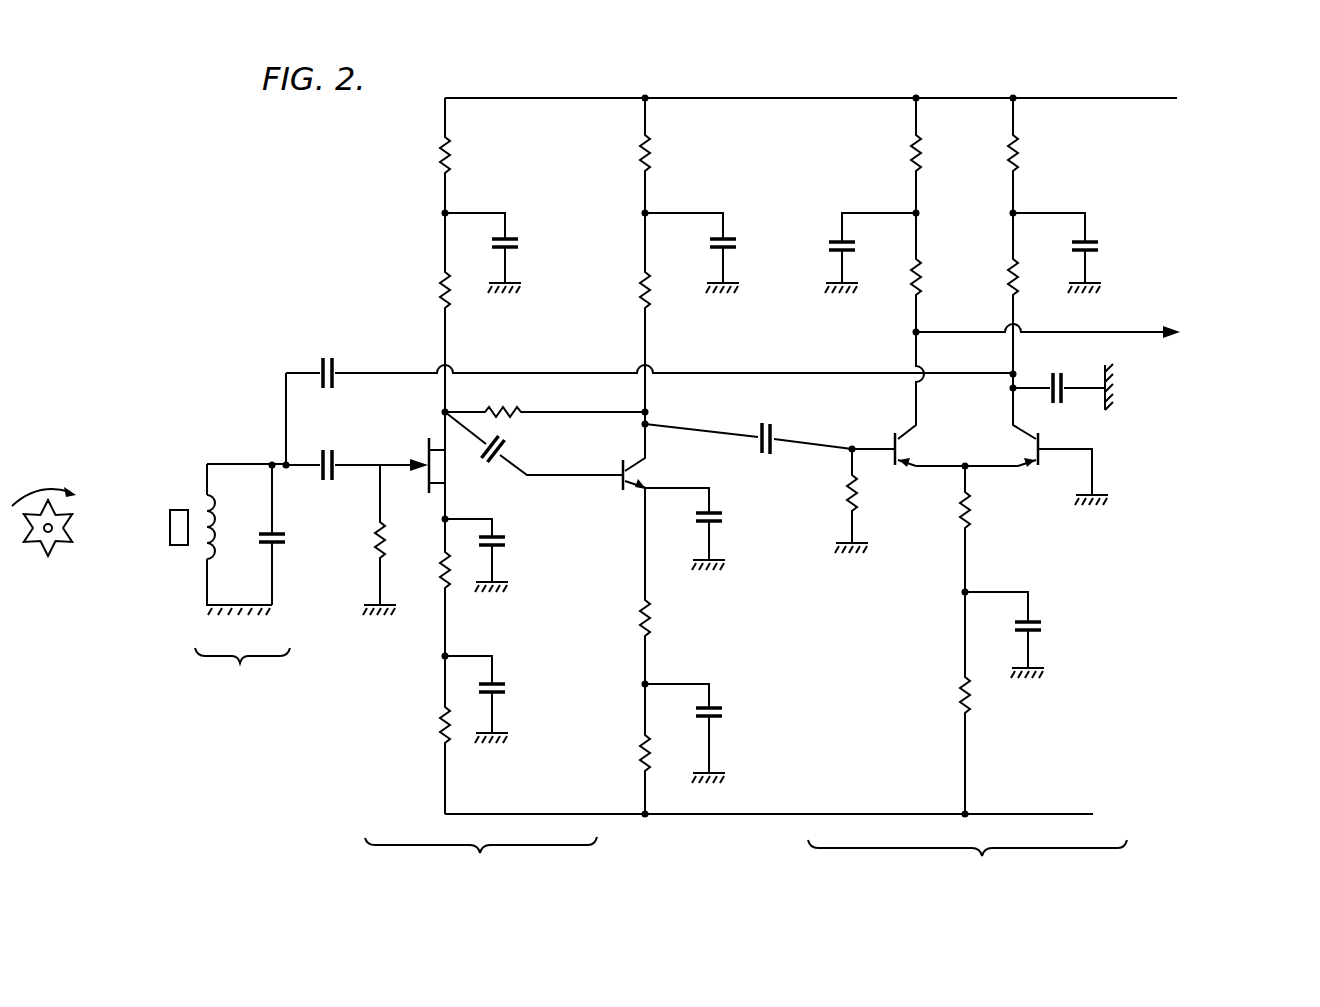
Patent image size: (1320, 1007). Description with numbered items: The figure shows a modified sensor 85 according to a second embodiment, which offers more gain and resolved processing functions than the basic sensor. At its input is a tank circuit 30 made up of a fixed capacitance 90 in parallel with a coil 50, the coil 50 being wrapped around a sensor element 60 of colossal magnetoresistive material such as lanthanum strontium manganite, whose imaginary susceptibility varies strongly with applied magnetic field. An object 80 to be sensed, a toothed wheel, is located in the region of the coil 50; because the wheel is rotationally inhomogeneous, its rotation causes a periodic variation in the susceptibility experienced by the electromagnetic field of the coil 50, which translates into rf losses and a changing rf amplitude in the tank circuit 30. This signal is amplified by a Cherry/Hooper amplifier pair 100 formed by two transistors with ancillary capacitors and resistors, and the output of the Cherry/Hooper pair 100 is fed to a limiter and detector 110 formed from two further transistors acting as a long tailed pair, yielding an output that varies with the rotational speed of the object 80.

The tank circuit 30 is at (231, 586).
The coil 50 is at (203, 494).
The sensor element 60 is at (171, 516).
The object to be sensed 80 is at (64, 550).
The modified sensor 85 is at (288, 140).
The fixed capacitance 90 is at (282, 566).
The Cherry/Hooper amplifier pair 100 is at (362, 844).
The limiter and detector 110 is at (826, 857).